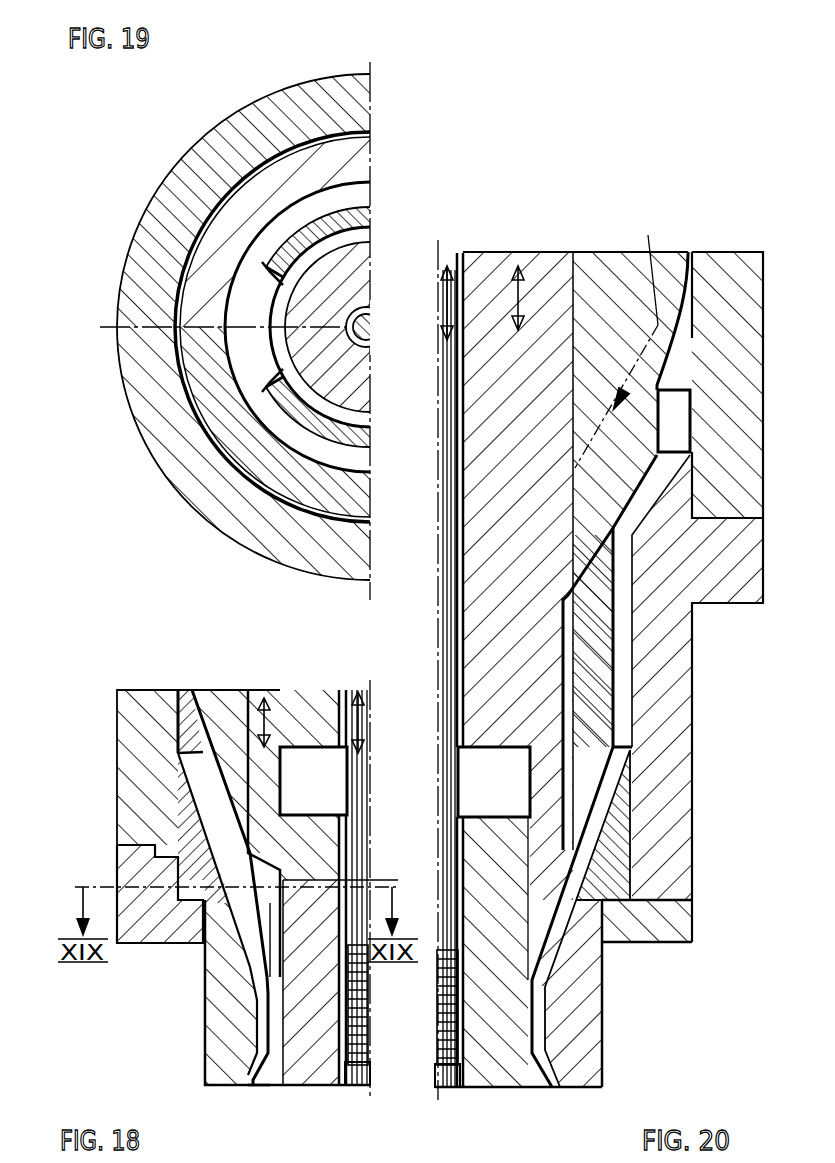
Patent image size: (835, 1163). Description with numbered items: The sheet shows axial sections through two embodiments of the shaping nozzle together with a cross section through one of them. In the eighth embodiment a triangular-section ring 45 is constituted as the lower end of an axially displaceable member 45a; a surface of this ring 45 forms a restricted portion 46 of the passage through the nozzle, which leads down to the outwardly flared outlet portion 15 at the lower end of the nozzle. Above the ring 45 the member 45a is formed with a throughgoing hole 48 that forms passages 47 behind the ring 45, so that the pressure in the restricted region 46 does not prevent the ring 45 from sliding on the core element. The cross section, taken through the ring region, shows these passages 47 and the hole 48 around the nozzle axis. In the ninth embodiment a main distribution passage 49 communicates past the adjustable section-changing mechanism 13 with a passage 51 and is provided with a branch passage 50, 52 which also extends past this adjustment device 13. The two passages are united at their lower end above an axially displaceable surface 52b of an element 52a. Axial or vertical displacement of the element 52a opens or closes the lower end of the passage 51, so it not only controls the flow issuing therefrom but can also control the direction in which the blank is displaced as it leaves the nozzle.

In FIG. 20, the adjustable section-changing mechanism 13 is at (675, 420).
In FIG. 18, the outwardly flared outlet portion 15 is at (258, 1087).
In FIG. 18, the triangular-section ring 45 is at (205, 944).
In FIG. 18, the axially displaceable member 45a is at (265, 762).
In FIG. 18, the restricted portion 46 is at (263, 920).
In FIG. 19, the passages 47 is at (313, 250).
In FIG. 18, the passages 47 is at (262, 965).
In FIG. 19, the throughgoing hole 48 is at (268, 307).
In FIG. 18, the throughgoing hole 48 is at (258, 877).
In FIG. 20, the main distribution passage 49 is at (687, 293).
In FIG. 20, the branch passage 50 is at (617, 334).
In FIG. 20, the passage 51 is at (623, 670).
In FIG. 20, the branch passage 52 is at (568, 737).
In FIG. 20, the element 52a is at (487, 635).
In FIG. 20, the axially displaceable surface 52b is at (558, 908).